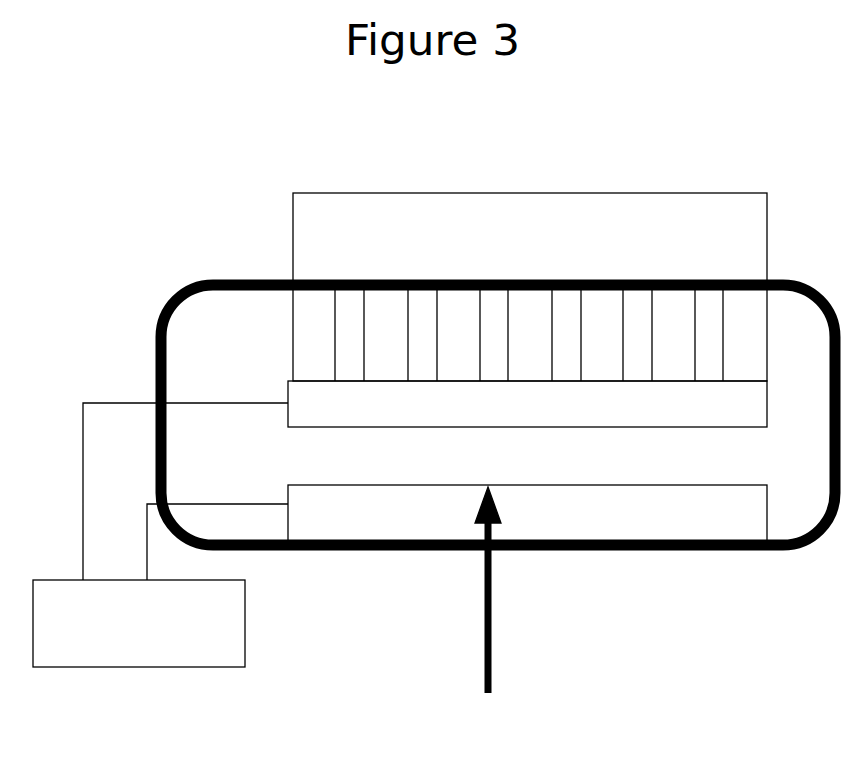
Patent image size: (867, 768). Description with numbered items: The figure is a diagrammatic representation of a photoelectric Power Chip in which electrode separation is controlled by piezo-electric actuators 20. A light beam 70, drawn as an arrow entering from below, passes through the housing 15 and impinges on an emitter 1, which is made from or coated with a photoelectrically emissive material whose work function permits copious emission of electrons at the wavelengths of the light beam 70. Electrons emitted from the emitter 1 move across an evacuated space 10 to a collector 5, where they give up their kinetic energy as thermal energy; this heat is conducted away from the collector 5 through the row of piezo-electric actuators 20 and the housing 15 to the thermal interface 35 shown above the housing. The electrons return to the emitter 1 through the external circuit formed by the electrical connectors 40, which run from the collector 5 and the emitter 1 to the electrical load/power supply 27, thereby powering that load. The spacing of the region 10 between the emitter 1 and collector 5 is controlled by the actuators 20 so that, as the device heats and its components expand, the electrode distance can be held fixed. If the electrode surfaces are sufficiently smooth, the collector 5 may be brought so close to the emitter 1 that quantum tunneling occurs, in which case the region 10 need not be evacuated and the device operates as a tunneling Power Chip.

The emitter 1 is at (527, 515).
The collector 5 is at (527, 404).
The evacuated space 10 is at (603, 458).
The housing 15 is at (167, 298).
The piezo-electric actuators 20 is at (529, 333).
The electrical load/power supply 27 is at (245, 661).
The thermal interface 35 is at (530, 287).
The electrical connectors 40 is at (146, 528).
The light beam 70 is at (500, 590).